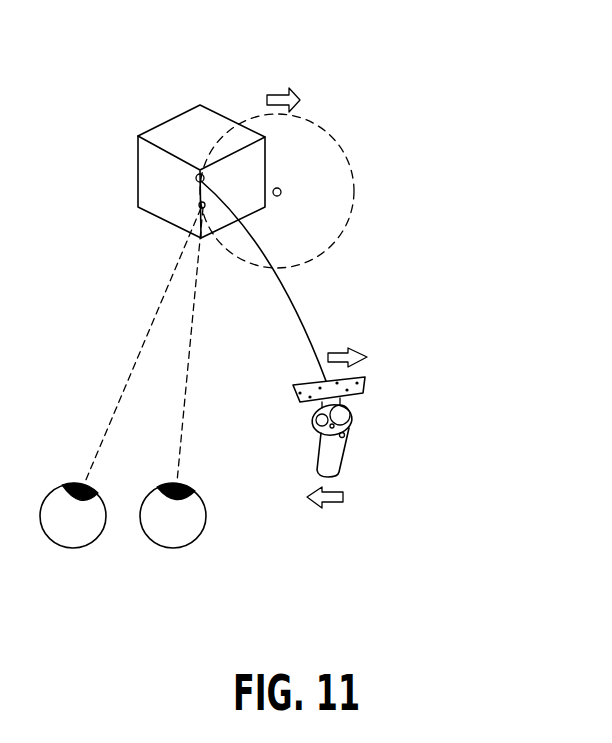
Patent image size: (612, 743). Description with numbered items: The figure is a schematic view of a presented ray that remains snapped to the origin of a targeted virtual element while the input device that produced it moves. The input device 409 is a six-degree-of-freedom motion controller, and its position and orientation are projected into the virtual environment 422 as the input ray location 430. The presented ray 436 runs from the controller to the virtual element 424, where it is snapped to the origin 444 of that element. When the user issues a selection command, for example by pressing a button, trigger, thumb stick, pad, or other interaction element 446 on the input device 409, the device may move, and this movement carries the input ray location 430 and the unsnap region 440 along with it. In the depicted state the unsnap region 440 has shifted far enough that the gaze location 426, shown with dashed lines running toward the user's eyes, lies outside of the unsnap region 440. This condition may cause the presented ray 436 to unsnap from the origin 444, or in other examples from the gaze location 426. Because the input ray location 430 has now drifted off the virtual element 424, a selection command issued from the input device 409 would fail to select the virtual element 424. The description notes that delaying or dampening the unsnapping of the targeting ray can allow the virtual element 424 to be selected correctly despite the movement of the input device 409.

The virtual environment 422 is at (208, 80).
The virtual element 424 is at (138, 179).
The gaze location 426 is at (199, 208).
The origin 444 is at (196, 178).
The input ray location 430 is at (282, 192).
The unsnap region 440 is at (345, 232).
The presented ray 436 is at (292, 303).
The input device 409 is at (353, 413).
The interaction element 446 is at (312, 423).